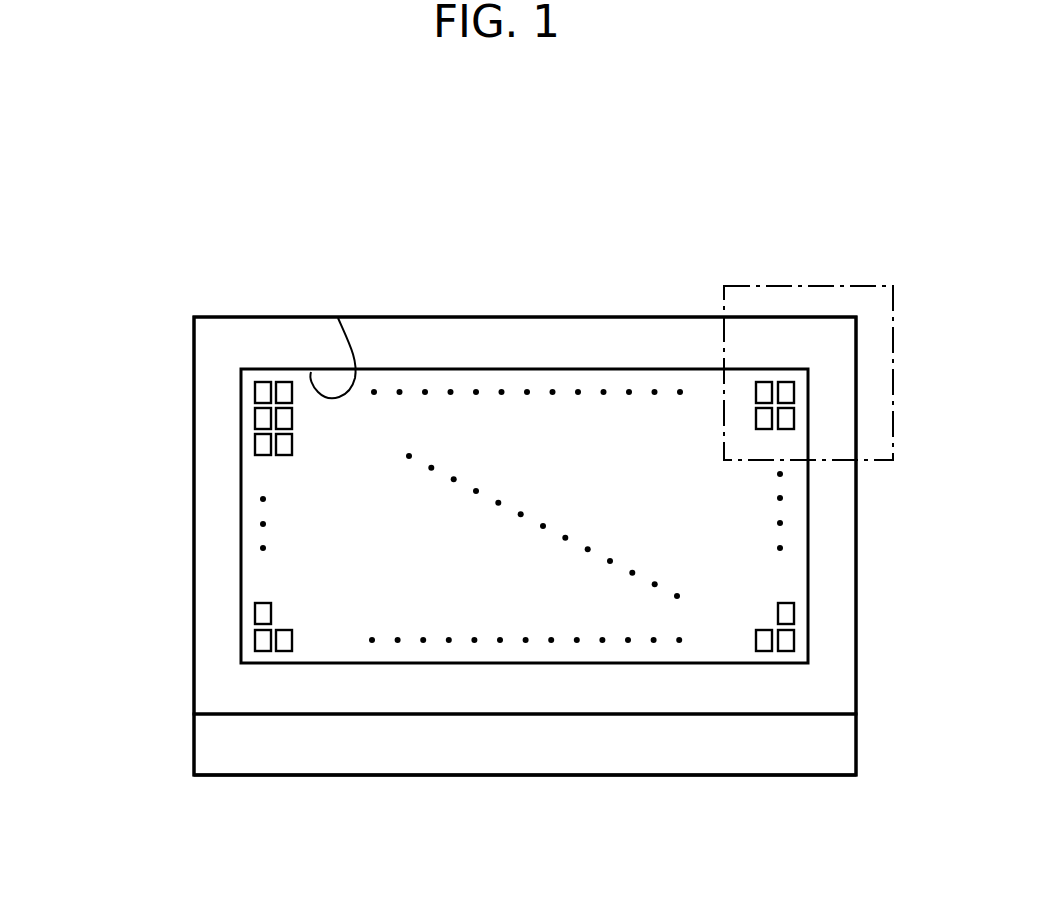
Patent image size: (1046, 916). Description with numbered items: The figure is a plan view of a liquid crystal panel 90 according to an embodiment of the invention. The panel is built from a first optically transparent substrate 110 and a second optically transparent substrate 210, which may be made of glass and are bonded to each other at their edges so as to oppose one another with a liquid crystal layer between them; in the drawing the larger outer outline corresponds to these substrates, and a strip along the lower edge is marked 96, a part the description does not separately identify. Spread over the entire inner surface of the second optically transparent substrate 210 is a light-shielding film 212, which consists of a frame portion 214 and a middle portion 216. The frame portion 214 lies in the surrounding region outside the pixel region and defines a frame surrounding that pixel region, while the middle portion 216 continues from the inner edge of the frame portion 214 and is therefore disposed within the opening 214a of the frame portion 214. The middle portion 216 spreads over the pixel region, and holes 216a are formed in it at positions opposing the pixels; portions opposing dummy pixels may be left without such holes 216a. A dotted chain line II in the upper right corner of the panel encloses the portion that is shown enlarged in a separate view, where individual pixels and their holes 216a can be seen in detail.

The liquid crystal panel 90 is at (262, 182).
The terminal portion 96 is at (721, 763).
The first optically transparent substrate 110 is at (836, 752).
The second optically transparent substrate 210 is at (840, 664).
The light-shielding film 212 is at (609, 237).
The frame portion 214 is at (455, 333).
The opening 214a is at (338, 318).
The middle portion 216 is at (577, 386).
The holes 216a is at (262, 446).
The dotted chain line II is at (816, 286).